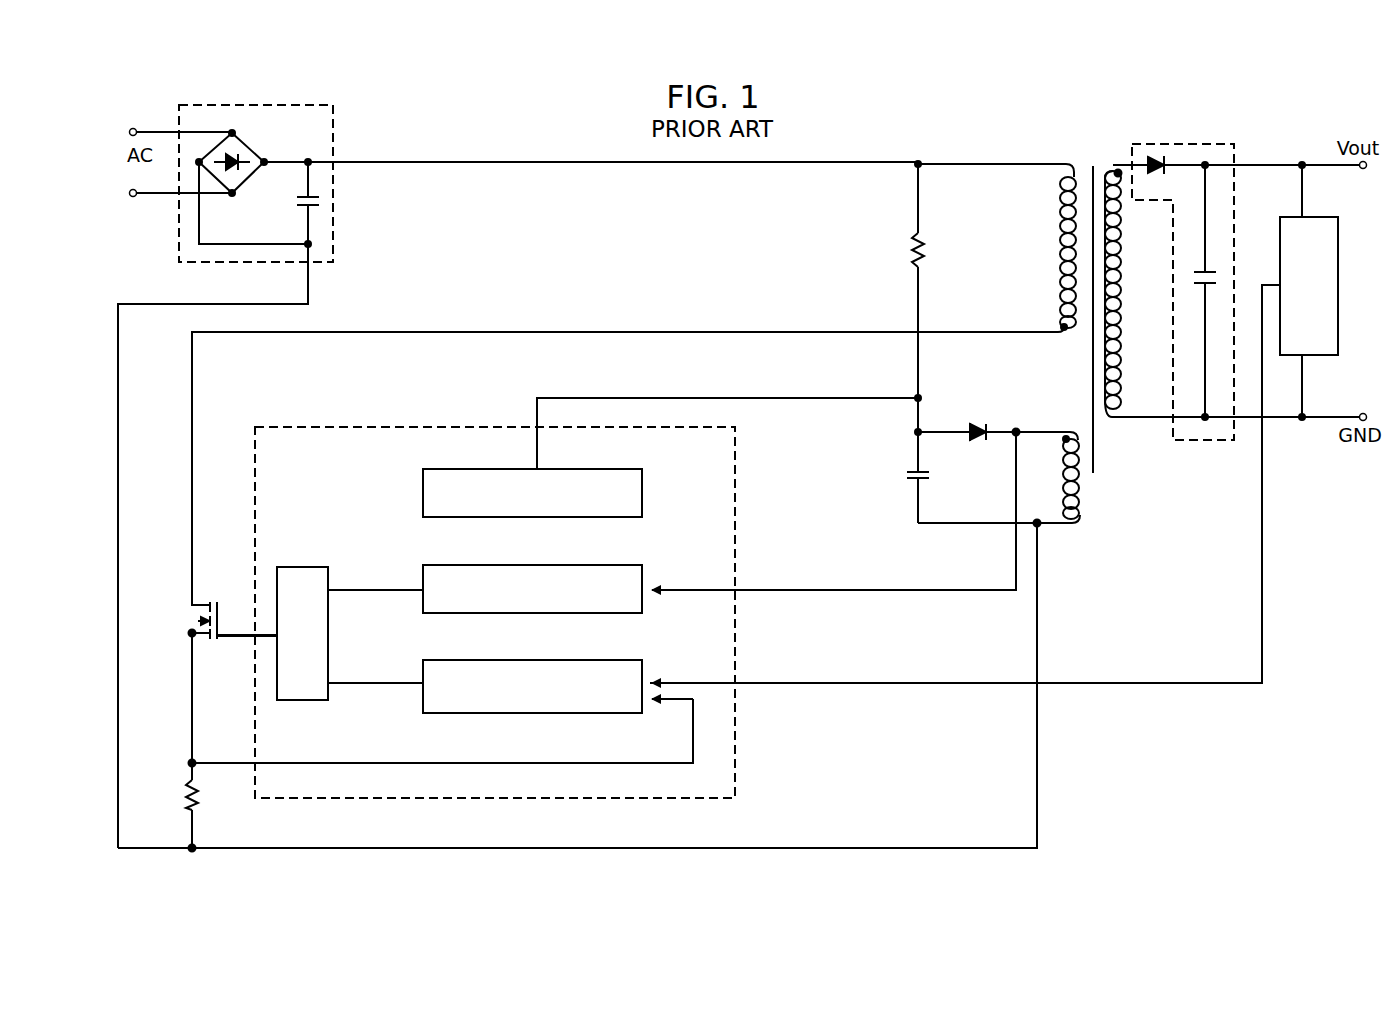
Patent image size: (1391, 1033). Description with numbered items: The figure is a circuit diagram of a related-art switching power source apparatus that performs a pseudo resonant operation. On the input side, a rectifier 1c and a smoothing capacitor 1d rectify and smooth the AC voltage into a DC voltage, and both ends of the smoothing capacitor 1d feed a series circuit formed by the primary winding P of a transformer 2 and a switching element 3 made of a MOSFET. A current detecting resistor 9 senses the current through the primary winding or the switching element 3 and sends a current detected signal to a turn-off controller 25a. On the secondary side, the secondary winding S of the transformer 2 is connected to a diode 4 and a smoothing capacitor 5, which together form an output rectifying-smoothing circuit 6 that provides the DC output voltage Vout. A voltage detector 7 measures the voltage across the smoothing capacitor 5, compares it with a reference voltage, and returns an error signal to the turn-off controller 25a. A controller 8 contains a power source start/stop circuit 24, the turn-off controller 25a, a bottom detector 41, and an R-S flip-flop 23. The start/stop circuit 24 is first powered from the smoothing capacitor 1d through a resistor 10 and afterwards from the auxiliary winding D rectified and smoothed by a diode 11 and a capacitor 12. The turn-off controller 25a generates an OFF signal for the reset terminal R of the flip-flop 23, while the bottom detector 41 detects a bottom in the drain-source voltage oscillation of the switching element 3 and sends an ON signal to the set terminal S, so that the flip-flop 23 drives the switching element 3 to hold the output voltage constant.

The rectifier 1c is at (261, 151).
The smoothing capacitor 1d is at (294, 206).
The transformer 2 is at (1093, 166).
The switching element 3 is at (183, 625).
The diode 4 is at (1166, 167).
The smoothing capacitor 5 is at (1200, 285).
The output rectifying/smoothing circuit 6 is at (1237, 184).
The voltage detector 7 is at (1338, 245).
The controller 8 is at (489, 612).
The current detecting resistor 9 is at (201, 800).
The resistor 10 is at (925, 250).
The diode 11 is at (980, 441).
The capacitor 12 is at (930, 480).
The R-S flip-flop 23 is at (300, 567).
The power source start/stop circuit 24 is at (423, 490).
The bottom detector 41 is at (532, 613).
The turn-off controller 25a is at (536, 713).